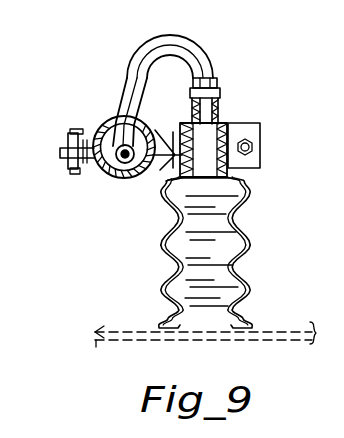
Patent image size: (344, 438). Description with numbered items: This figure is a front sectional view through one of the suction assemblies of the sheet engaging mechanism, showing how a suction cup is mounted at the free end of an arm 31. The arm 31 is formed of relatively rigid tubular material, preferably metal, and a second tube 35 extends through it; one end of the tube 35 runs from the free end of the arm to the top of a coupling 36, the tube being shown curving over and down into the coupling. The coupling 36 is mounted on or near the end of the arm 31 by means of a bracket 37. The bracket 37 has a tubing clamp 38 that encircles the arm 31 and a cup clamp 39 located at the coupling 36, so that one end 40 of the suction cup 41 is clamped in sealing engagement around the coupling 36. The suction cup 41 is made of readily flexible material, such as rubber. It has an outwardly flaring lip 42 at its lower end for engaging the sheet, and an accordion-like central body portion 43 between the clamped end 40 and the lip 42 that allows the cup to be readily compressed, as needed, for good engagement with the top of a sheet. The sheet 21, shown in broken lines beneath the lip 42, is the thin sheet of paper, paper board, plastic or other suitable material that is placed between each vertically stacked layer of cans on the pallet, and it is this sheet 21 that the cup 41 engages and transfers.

The thin sheet 21 is at (273, 327).
The arm 31 is at (100, 118).
The second tube 35 is at (121, 62).
The coupling 36 is at (219, 107).
The bracket 37 is at (155, 129).
The tubing clamp 38 is at (98, 172).
The cup clamp 39 is at (254, 125).
The end of suction cup 40 is at (168, 184).
The suction cup 41 is at (250, 200).
The outwardly flaring lip 42 is at (167, 328).
The accordion-like central body portion 43 is at (252, 244).